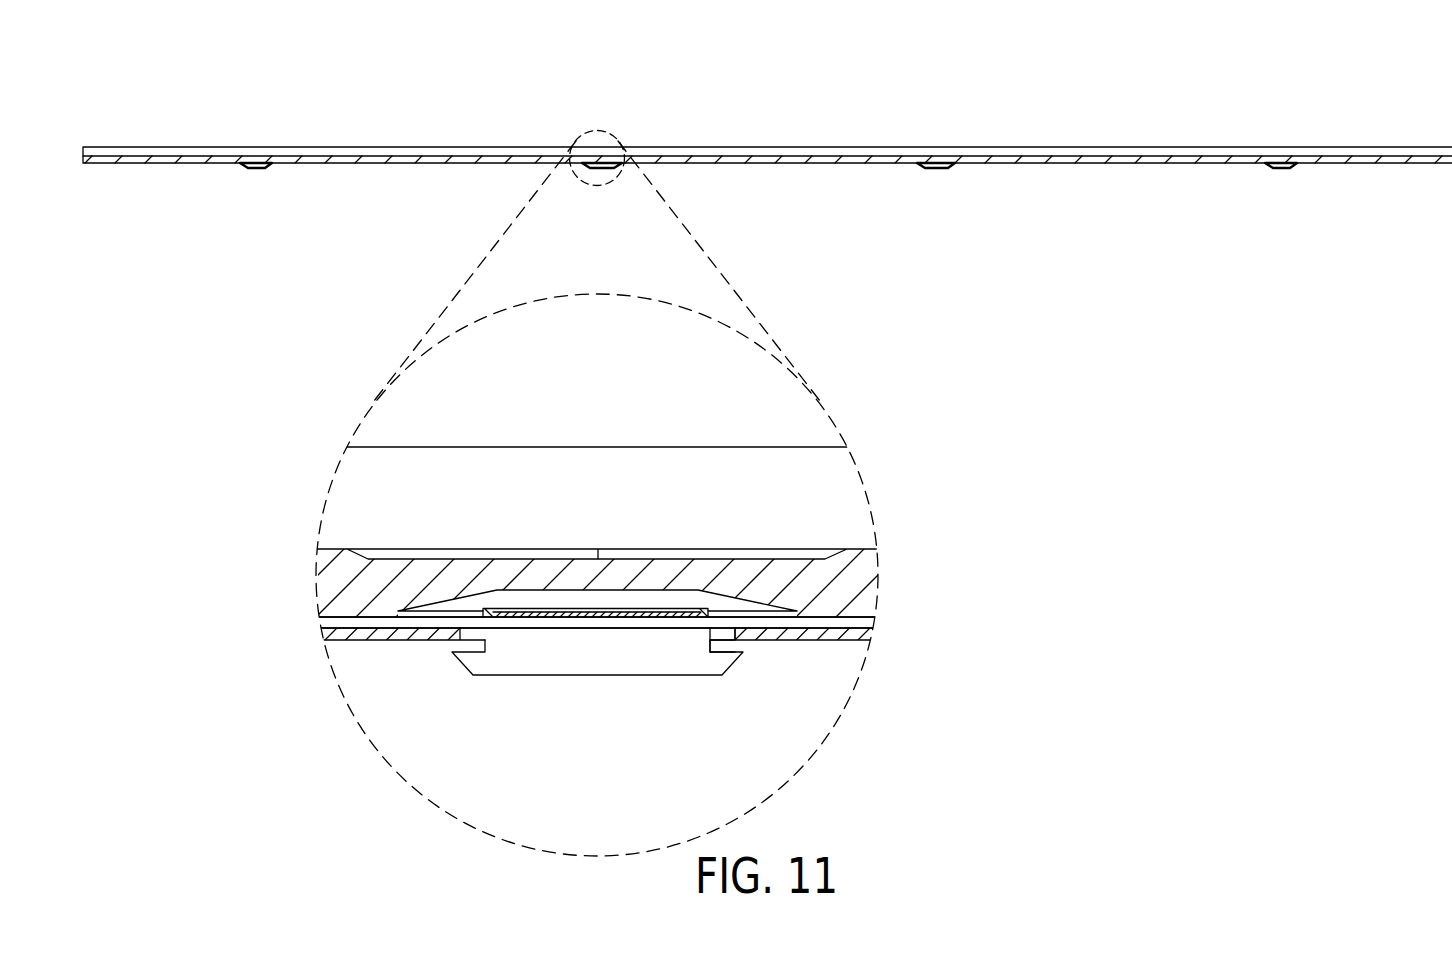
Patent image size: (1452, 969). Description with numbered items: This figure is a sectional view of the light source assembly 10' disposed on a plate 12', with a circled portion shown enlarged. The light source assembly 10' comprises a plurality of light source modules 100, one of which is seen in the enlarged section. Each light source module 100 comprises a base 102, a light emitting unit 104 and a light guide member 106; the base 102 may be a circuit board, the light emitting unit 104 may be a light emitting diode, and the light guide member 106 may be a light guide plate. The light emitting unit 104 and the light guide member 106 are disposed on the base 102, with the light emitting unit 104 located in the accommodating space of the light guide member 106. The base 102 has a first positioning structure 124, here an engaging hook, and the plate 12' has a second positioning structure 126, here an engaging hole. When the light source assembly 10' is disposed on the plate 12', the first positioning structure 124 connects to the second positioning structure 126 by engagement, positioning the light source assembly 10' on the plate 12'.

The light source assembly 10' is at (767, 111).
The plate 12' is at (767, 396).
The light source module 100 is at (610, 484).
The base 102 is at (811, 624).
The light emitting unit 104 is at (583, 610).
The light guide member 106 is at (671, 575).
The first positioning structure 124 is at (596, 676).
The second positioning structure 126 is at (722, 644).